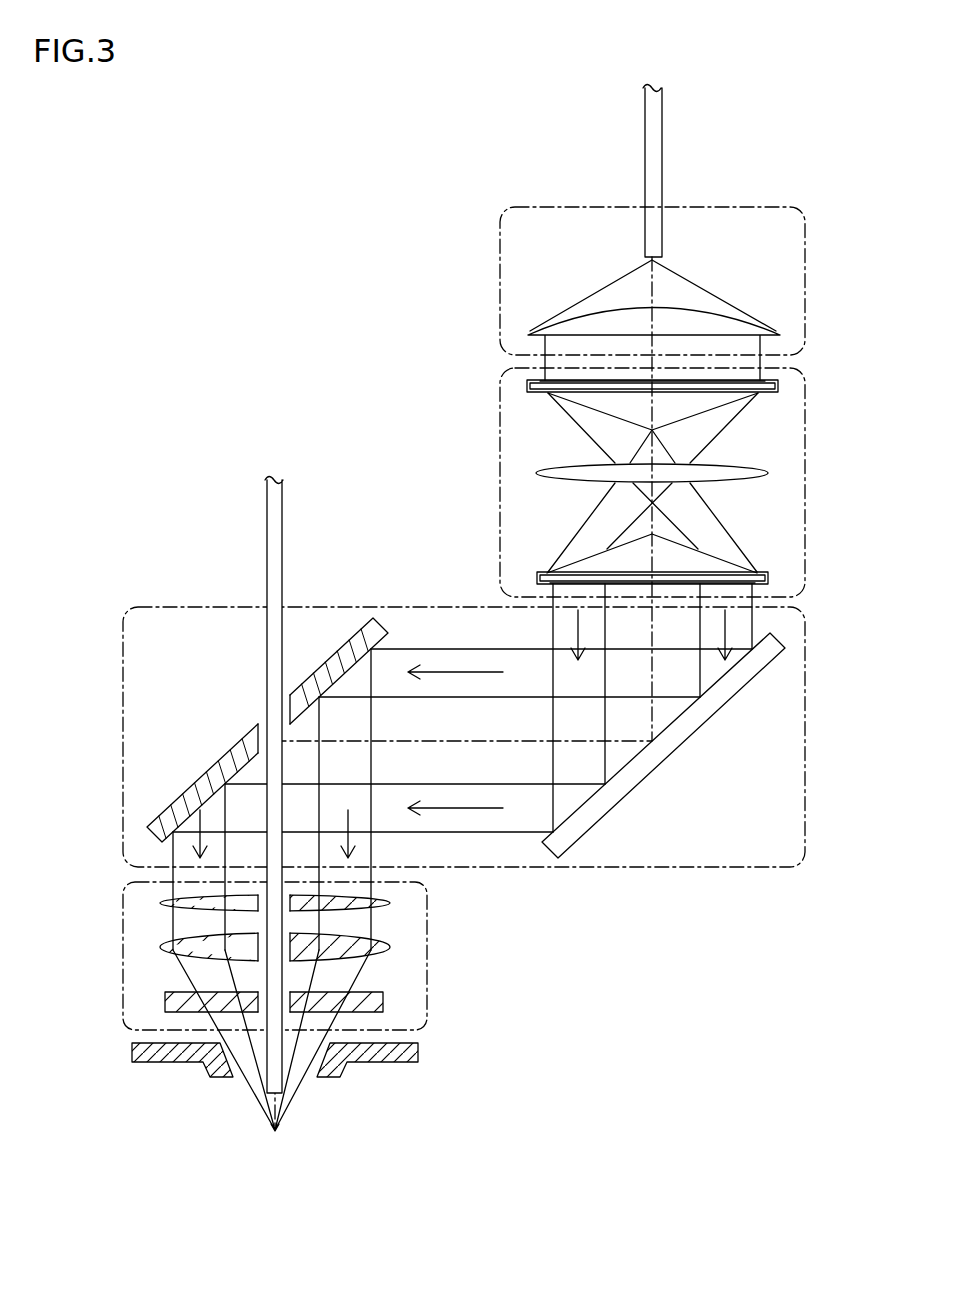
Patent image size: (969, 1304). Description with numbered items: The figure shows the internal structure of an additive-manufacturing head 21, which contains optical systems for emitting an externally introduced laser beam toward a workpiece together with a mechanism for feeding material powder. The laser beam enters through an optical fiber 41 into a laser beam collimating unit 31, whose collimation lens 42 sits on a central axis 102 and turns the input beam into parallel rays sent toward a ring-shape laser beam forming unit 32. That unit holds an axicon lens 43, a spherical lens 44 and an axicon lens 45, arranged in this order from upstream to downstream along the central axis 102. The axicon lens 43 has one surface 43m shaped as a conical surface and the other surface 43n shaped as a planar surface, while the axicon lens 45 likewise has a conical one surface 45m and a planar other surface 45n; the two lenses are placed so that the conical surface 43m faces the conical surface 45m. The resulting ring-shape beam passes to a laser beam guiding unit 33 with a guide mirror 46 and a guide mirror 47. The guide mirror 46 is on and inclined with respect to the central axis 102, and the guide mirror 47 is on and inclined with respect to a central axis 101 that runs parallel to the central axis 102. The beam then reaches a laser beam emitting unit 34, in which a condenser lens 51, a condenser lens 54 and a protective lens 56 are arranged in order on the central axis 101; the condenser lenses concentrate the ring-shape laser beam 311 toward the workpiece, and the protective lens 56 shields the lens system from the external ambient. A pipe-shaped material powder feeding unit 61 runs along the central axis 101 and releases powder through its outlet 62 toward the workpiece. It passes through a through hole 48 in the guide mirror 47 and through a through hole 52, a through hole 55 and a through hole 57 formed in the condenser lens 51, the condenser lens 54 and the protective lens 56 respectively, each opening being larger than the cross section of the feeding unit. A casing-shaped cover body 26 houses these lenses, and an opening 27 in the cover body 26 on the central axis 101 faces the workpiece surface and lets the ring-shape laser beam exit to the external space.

The additive-manufacturing head 21 is at (156, 173).
The cover body 26 is at (307, 1076).
The opening 27 is at (312, 1078).
The laser beam collimating unit 31 is at (500, 238).
The ring-shape laser beam forming unit 32 is at (805, 452).
The laser beam guiding unit 33 is at (720, 869).
The laser beam emitting unit 34 is at (427, 915).
The optical fiber 41 is at (645, 130).
The collimation lens 42 is at (780, 334).
The axicon lens 43 is at (664, 414).
The one surface 43m is at (765, 396).
The other surface 43n is at (778, 381).
The spherical lens 44 is at (537, 474).
The axicon lens 45 is at (710, 567).
The one surface 45m is at (748, 567).
The other surface 45n is at (770, 583).
The guide mirror 46 is at (742, 690).
The guide mirror 47 is at (228, 702).
The through hole 48 is at (262, 720).
The condenser lens 51 is at (275, 896).
The through hole 52 is at (290, 893).
The condenser lens 54 is at (229, 967).
The through hole 55 is at (258, 962).
The protective lens 56 is at (324, 1007).
The through hole 57 is at (290, 1010).
The material powder feeding unit 61 is at (305, 809).
The outlet 62 is at (283, 1112).
The central axis 101 is at (267, 872).
The central axis 102 is at (640, 528).
The laser beam 311 is at (248, 1090).